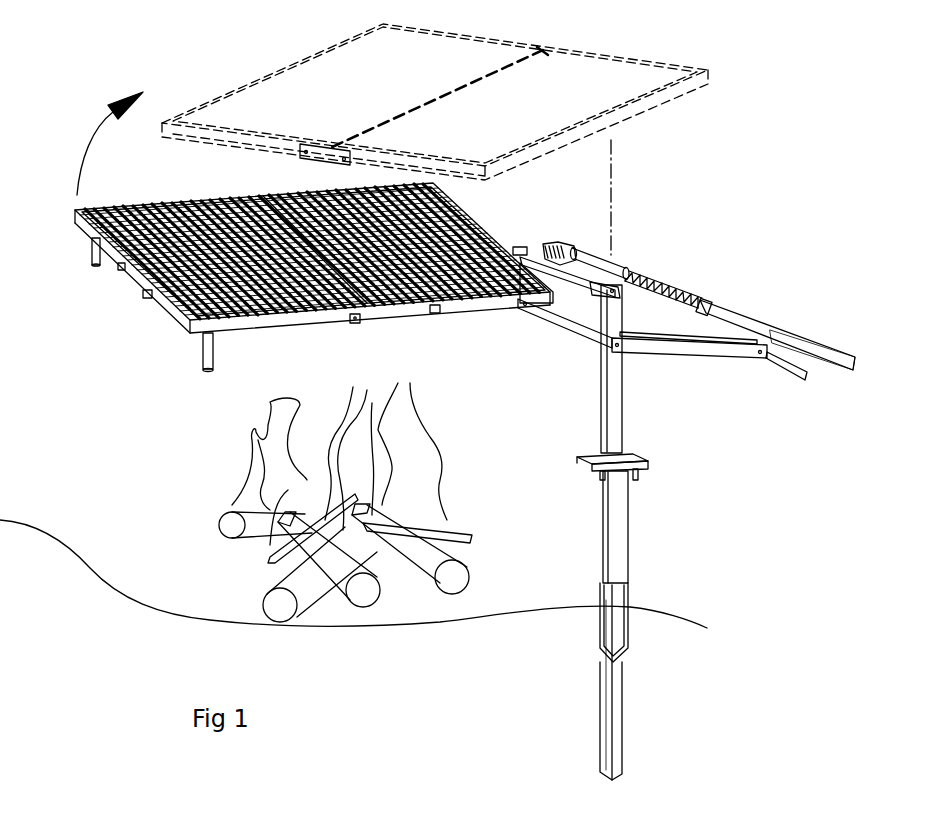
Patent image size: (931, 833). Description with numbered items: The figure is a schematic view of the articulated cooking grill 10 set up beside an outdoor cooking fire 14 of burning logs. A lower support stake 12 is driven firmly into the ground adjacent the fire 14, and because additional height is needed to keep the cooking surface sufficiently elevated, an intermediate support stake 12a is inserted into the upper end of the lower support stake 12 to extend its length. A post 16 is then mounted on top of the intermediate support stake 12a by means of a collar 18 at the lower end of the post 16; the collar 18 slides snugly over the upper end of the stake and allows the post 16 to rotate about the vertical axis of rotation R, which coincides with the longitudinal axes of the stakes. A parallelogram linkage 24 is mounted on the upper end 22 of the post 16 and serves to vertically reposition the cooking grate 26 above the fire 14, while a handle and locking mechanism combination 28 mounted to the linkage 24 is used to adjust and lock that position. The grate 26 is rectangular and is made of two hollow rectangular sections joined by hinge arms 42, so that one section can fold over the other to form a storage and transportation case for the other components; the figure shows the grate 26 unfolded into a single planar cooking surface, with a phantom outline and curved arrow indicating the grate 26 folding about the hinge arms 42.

The articulated cooking grill 10 is at (385, 352).
The lower support stake 12 is at (694, 671).
The intermediate support stake 12a is at (668, 527).
The cooking fire 14 is at (359, 502).
The post 16 is at (651, 296).
The collar 18 is at (648, 478).
The upper end of post 22 is at (565, 347).
The parallelogram linkage 24 is at (541, 311).
The cooking grate 26 is at (391, 198).
The handle and locking mechanism combination 28 is at (699, 285).
The hinge arms 42 is at (323, 338).